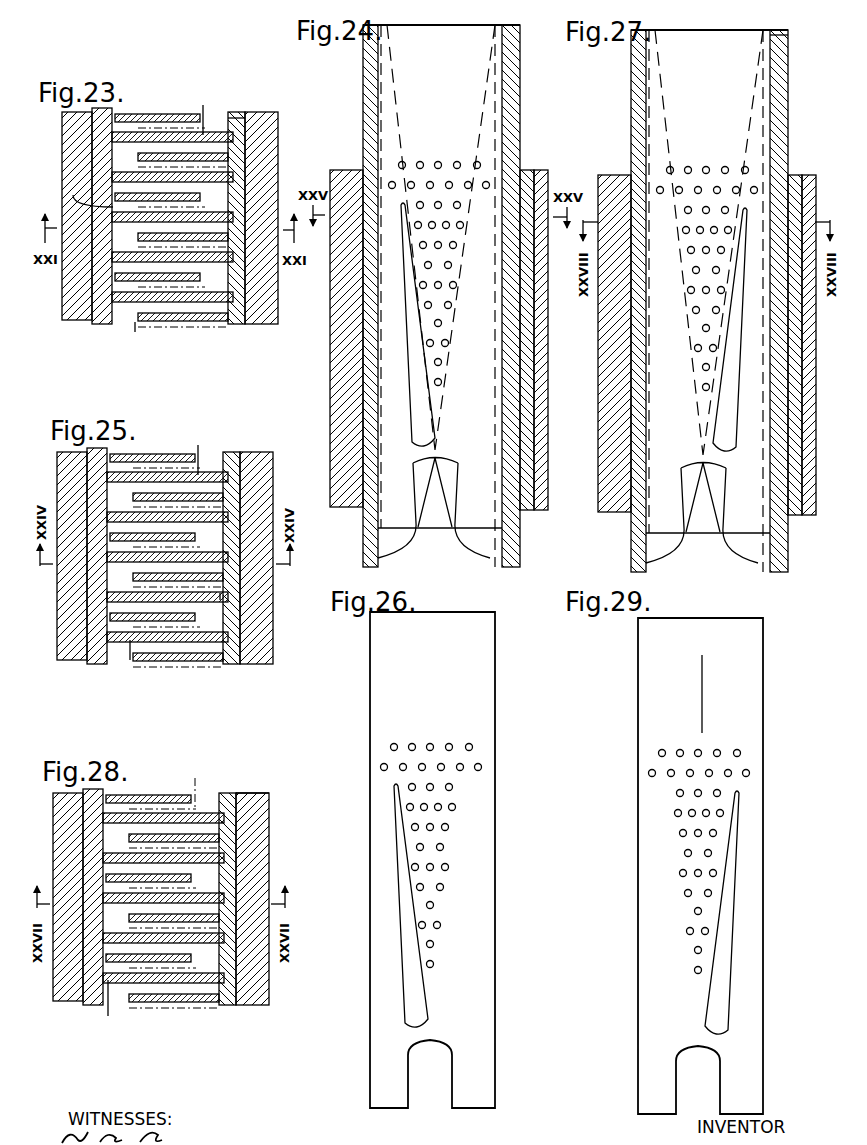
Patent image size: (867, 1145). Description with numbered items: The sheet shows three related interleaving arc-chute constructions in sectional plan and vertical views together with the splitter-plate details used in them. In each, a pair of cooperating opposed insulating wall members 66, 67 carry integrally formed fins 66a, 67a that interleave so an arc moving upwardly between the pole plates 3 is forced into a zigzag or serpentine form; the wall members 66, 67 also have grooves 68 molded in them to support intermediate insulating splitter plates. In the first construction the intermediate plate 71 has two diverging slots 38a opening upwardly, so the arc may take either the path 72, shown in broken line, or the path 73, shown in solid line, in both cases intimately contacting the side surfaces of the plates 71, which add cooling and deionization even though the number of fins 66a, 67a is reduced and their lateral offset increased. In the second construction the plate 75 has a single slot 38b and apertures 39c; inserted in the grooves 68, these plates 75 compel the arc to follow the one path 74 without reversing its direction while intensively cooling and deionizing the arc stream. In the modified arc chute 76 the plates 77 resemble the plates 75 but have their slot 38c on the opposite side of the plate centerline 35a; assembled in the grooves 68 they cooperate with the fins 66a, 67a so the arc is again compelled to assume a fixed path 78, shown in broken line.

In FIG. 23, the pole plates 3 is at (62, 141).
In FIG. 25, the pole plates 3 is at (57, 611).
In FIG. 28, the pole plates 3 is at (53, 837).
In FIG. 24, the pole plates 3 is at (540, 317).
In FIG. 27, the pole plates 3 is at (812, 323).
In FIG. 29, the centerline 35a is at (703, 692).
In FIG. 23, the diverging slots 38a is at (73, 195).
In FIG. 25, the single slot 38b is at (128, 652).
In FIG. 24, the single slot 38b is at (410, 405).
In FIG. 26, the single slot 38b is at (396, 851).
In FIG. 27, the slot 38c is at (725, 412).
In FIG. 29, the slot 38c is at (735, 852).
In FIG. 24, the apertures 39c is at (421, 161).
In FIG. 27, the apertures 39c is at (691, 165).
In FIG. 26, the apertures 39c is at (480, 763).
In FIG. 29, the apertures 39c is at (700, 752).
In FIG. 23, the insulating wall member 66 is at (100, 324).
In FIG. 25, the insulating wall member 66 is at (95, 666).
In FIG. 28, the insulating wall member 66 is at (88, 1005).
In FIG. 24, the insulating wall member 66 is at (366, 150).
In FIG. 27, the insulating wall member 66 is at (634, 155).
In FIG. 23, the fins 66a is at (112, 286).
In FIG. 25, the fins 66a is at (146, 460).
In FIG. 28, the fins 66a is at (147, 797).
In FIG. 24, the fins 66a is at (412, 533).
In FIG. 27, the fins 66a is at (682, 540).
In FIG. 23, the insulating wall member 67 is at (233, 326).
In FIG. 25, the insulating wall member 67 is at (233, 660).
In FIG. 28, the insulating wall member 67 is at (241, 793).
In FIG. 24, the insulating wall member 67 is at (516, 150).
In FIG. 27, the insulating wall member 67 is at (785, 149).
In FIG. 23, the fins 67a is at (194, 320).
In FIG. 25, the fins 67a is at (190, 661).
In FIG. 28, the fins 67a is at (160, 1001).
In FIG. 24, the fins 67a is at (470, 550).
In FIG. 27, the fins 67a is at (735, 555).
In FIG. 23, the grooves 68 is at (112, 145).
In FIG. 25, the grooves 68 is at (116, 486).
In FIG. 28, the grooves 68 is at (104, 899).
In FIG. 24, the grooves 68 is at (505, 418).
In FIG. 27, the grooves 68 is at (646, 500).
In FIG. 23, the intermediate insulating plate 71 is at (218, 128).
In FIG. 23, the arc path 72 is at (165, 120).
In FIG. 23, the arc path 73 is at (135, 332).
In FIG. 25, the arc path 74 is at (196, 462).
In FIG. 25, the insulating plate 75 is at (220, 595).
In FIG. 26, the insulating plate 75 is at (495, 809).
In FIG. 28, the arc chute 76 is at (297, 821).
In FIG. 27, the arc chute 76 is at (815, 77).
In FIG. 28, the plate 77 is at (108, 1016).
In FIG. 29, the plate 77 is at (765, 813).
In FIG. 28, the arc path 78 is at (196, 782).